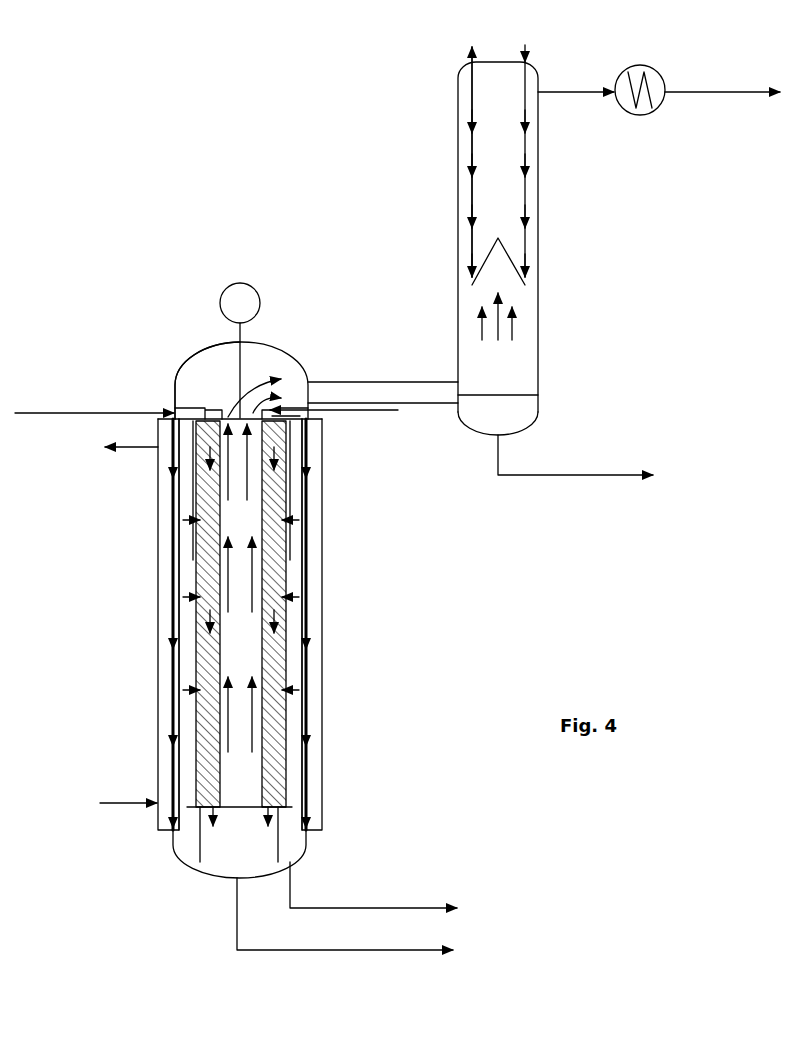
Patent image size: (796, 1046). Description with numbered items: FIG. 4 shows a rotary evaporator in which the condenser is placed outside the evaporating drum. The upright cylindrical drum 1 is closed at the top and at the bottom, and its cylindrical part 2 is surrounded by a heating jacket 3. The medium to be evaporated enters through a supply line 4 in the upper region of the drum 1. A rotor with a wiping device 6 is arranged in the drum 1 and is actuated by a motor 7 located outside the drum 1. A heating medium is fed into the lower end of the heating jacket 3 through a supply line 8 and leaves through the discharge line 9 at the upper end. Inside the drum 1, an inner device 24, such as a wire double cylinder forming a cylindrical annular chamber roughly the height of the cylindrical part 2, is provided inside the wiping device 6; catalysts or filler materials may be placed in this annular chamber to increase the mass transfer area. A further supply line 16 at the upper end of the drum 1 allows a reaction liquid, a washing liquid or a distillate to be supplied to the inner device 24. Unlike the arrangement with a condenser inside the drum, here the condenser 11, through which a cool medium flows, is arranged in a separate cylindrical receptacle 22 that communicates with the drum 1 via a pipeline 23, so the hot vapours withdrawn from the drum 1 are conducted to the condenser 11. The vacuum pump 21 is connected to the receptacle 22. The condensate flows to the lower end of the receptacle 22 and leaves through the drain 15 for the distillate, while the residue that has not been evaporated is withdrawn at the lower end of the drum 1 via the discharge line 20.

The drum 1 is at (298, 356).
The cylindrical part 2 is at (173, 382).
The heating jacket 3 is at (323, 742).
The supply line 4 is at (150, 412).
The wiping device 6 is at (303, 512).
The motor 7 is at (256, 288).
The supply line 8 is at (131, 806).
The discharge line 9 is at (121, 450).
The condenser 11 is at (528, 225).
The drain 15 is at (577, 475).
The further supply line 16 is at (364, 413).
The discharge line 20 is at (386, 908).
The vacuum pump 21 is at (662, 72).
The receptacle 22 is at (540, 380).
The pipeline 23 is at (378, 380).
The inner device 24 is at (280, 642).